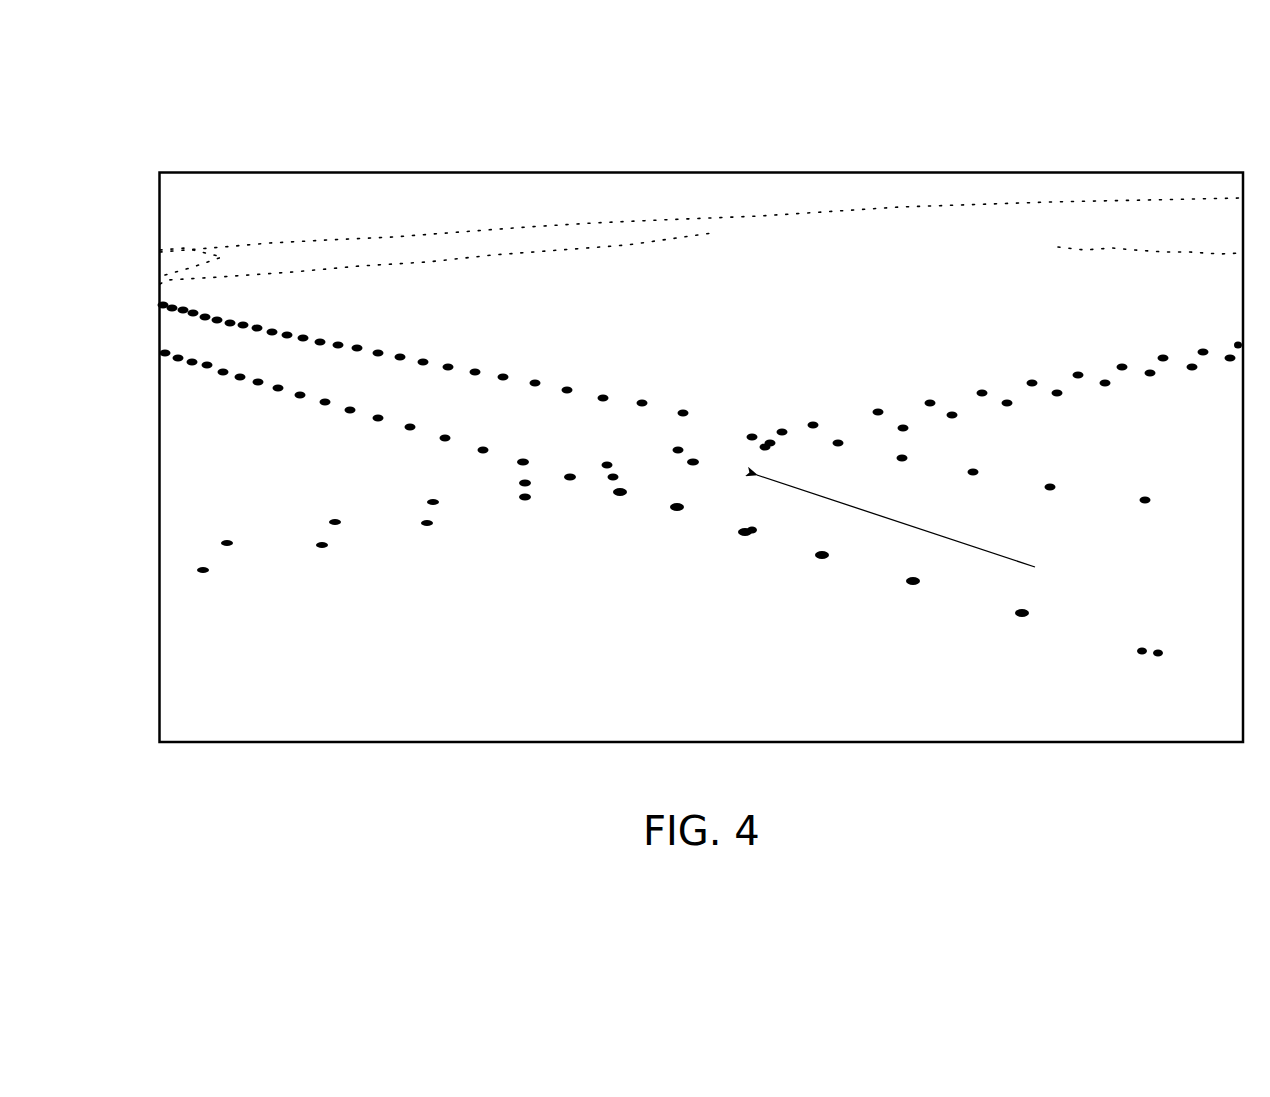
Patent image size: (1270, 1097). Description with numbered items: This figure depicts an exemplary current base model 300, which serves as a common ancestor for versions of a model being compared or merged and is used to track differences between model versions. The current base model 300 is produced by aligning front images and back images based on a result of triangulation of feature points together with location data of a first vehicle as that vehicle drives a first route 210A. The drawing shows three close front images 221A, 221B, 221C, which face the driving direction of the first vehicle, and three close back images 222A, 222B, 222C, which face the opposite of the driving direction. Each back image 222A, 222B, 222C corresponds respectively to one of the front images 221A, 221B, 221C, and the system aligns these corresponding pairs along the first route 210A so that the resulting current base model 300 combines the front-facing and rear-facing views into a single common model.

The current base model 300 is at (1068, 140).
The first route 210A is at (979, 548).
The first close front image 221A is at (603, 500).
The second close front image 221B is at (673, 500).
The third close front image 221C is at (740, 520).
The first close back image 222A is at (622, 502).
The second close back image 222B is at (678, 523).
The third close back image 222C is at (743, 543).